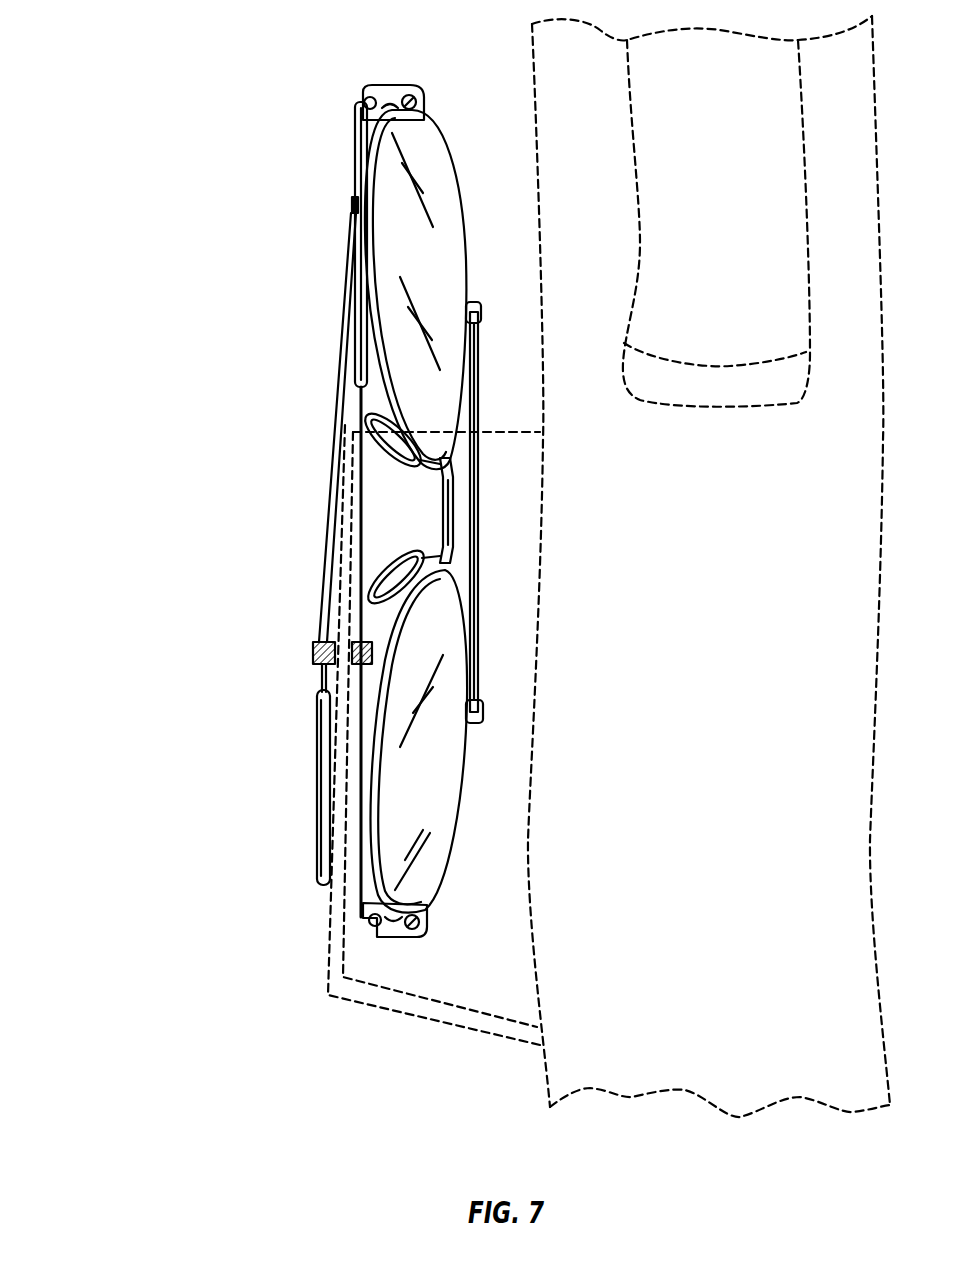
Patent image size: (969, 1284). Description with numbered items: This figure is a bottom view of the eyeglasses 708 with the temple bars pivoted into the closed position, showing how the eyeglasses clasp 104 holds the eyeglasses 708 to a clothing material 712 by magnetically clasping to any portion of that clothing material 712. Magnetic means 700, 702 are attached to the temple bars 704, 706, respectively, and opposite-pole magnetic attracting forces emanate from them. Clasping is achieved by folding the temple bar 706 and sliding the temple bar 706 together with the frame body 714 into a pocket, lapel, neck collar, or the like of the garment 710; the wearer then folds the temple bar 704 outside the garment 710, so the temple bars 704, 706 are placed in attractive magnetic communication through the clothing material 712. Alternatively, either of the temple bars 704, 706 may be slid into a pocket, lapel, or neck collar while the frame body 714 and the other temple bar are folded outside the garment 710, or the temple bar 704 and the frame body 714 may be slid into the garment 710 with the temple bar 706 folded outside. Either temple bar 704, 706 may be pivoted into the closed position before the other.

The eyeglasses clasp 104 is at (148, 672).
The magnetic means 700 is at (313, 650).
The magnetic means 702 is at (350, 669).
The temple bar 704 is at (352, 255).
The temple bar 706 is at (323, 688).
The eyeglasses 708 is at (412, 357).
The garment 710 is at (658, 1055).
The clothing material 712 is at (328, 958).
The frame body 714 is at (363, 143).